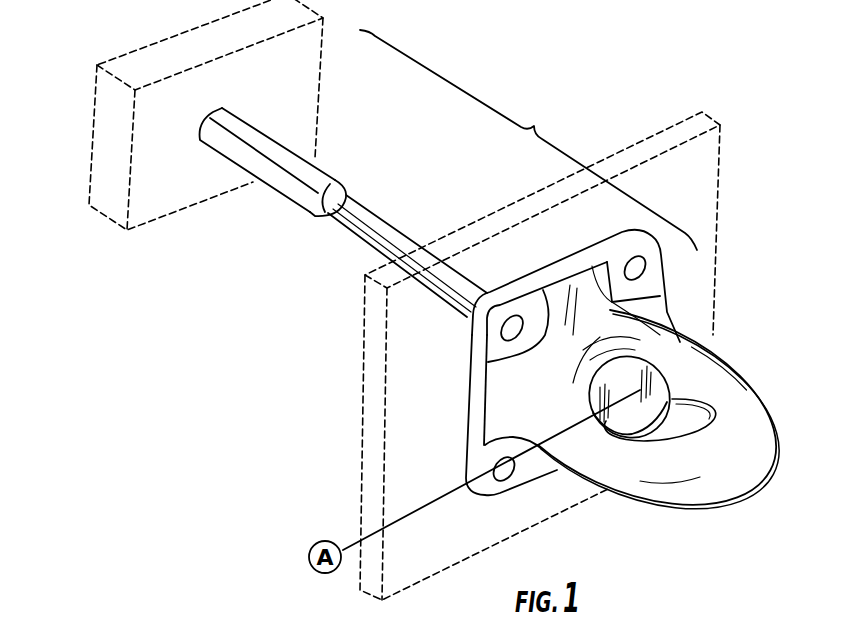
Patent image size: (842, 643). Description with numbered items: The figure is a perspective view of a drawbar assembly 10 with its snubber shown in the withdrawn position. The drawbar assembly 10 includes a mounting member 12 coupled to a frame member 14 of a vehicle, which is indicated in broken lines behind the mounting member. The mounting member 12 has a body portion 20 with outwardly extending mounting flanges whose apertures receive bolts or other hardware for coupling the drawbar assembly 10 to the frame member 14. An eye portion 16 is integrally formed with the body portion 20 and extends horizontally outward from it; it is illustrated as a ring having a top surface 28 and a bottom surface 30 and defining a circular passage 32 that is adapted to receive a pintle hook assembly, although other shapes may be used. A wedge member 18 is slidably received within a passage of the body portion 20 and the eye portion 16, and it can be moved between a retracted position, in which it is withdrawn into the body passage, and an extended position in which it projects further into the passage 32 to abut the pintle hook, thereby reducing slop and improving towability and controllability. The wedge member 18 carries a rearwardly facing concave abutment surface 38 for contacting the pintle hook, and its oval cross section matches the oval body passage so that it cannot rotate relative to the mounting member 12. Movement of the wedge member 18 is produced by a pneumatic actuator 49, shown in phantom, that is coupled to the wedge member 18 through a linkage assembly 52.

The drawbar assembly 10 is at (528, 140).
The mounting member 12 is at (465, 404).
The frame member 14 is at (362, 375).
The eye portion 16 is at (727, 465).
The wedge member 18 is at (627, 378).
The body portion 20 is at (473, 435).
The top surface 28 is at (716, 358).
The bottom surface 30 is at (685, 502).
The passage 32 is at (663, 427).
The concave abutment surface 38 is at (680, 402).
The pneumatic actuator 49 is at (90, 127).
The linkage assembly 52 is at (340, 222).